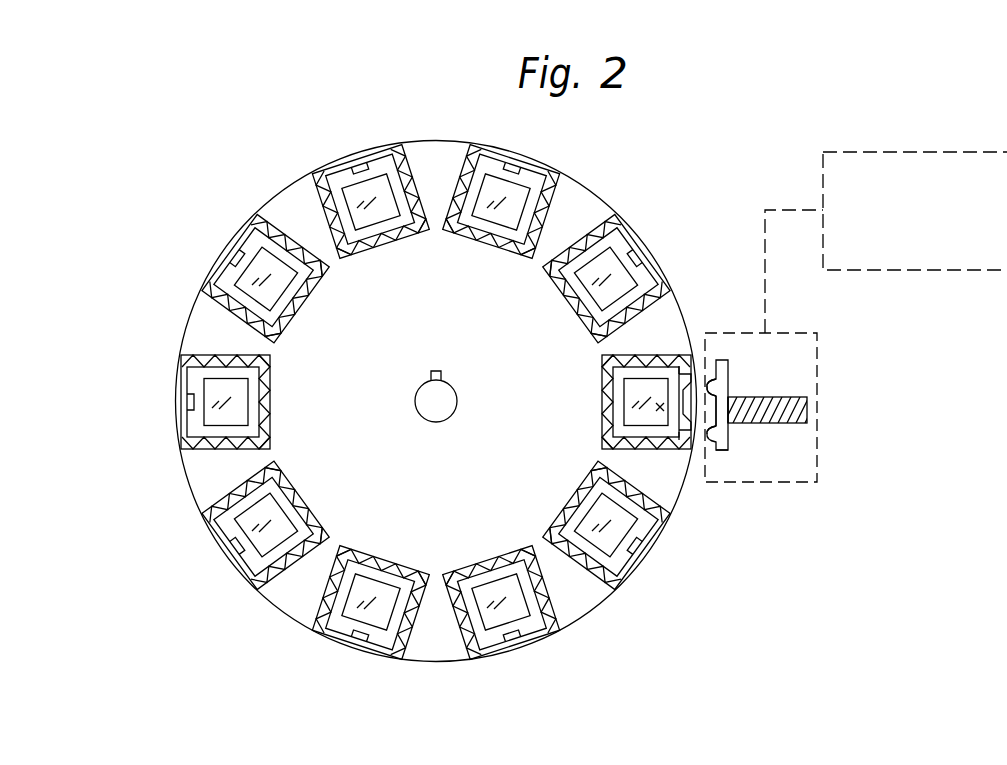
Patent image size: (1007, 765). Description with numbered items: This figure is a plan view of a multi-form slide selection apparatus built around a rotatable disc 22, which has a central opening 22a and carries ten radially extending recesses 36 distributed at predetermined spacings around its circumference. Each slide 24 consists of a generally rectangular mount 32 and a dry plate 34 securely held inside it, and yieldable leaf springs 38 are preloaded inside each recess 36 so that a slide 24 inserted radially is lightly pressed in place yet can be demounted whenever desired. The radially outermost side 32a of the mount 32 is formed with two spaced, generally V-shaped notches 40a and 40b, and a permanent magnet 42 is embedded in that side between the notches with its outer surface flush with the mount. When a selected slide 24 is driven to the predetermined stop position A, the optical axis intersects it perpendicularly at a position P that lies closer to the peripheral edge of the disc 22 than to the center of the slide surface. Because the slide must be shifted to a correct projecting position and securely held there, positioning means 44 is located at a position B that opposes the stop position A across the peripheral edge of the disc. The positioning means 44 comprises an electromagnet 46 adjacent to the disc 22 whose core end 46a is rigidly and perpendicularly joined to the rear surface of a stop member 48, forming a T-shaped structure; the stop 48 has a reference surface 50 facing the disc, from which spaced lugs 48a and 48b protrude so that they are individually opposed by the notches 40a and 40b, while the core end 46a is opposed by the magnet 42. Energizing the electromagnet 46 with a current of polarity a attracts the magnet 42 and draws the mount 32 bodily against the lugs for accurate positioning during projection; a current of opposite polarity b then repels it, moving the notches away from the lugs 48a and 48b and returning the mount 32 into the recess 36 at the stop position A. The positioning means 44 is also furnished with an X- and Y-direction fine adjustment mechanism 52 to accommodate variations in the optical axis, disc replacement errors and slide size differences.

The disc 22 is at (575, 625).
The center shaft hole 22a is at (422, 406).
The slide 24 is at (590, 381).
The mount 32 is at (614, 436).
The radially outermost side of the slide mount 32a is at (685, 440).
The dry plate 34 is at (634, 392).
The recess 36 is at (691, 378).
The leaf spring 38 is at (602, 362).
The notch 40a is at (708, 382).
The notch 40b is at (708, 437).
The permanent magnet 42 is at (686, 372).
The positioning means 44 is at (793, 333).
The electromagnet 46 is at (794, 397).
The core end 46a is at (731, 392).
The stop member 48 is at (723, 359).
The lug 48a is at (729, 376).
The lug 48b is at (722, 451).
The reference surface 50 is at (720, 404).
The X- and Y-direction fine adjustment mechanism 52 is at (982, 152).
The position P is at (656, 413).
The stop position A is at (578, 402).
The position B is at (836, 409).
The polarity a is at (734, 423).
The polarity b is at (800, 423).